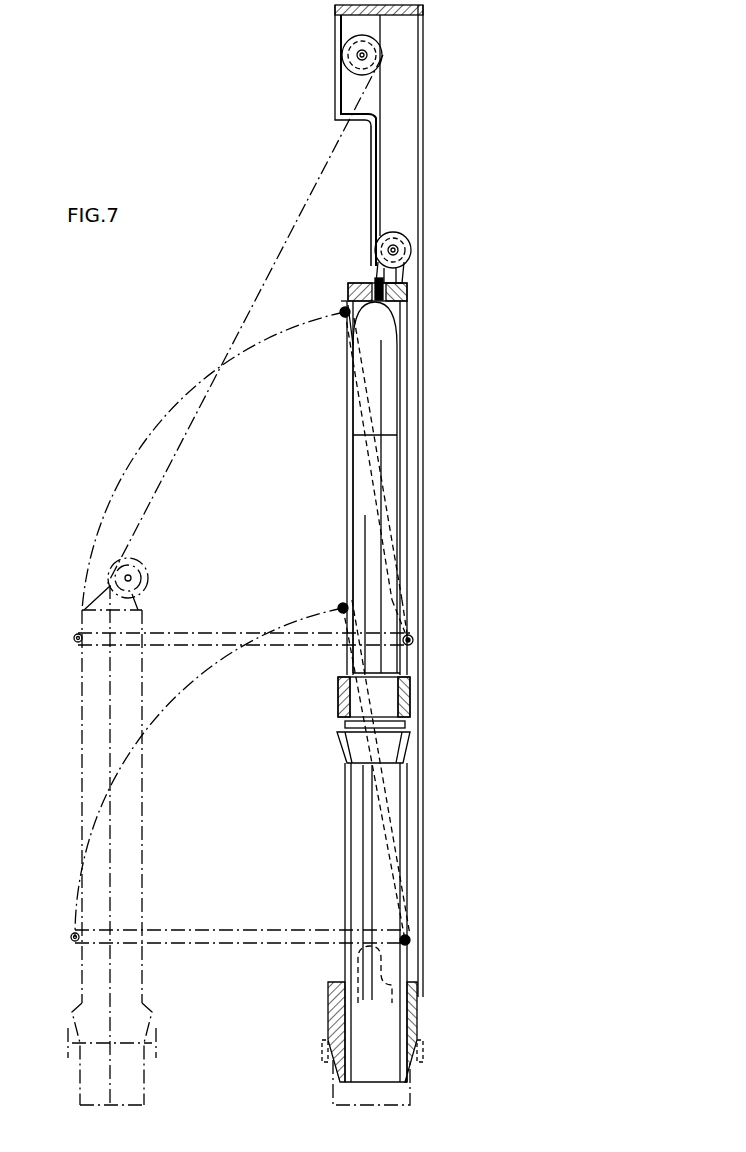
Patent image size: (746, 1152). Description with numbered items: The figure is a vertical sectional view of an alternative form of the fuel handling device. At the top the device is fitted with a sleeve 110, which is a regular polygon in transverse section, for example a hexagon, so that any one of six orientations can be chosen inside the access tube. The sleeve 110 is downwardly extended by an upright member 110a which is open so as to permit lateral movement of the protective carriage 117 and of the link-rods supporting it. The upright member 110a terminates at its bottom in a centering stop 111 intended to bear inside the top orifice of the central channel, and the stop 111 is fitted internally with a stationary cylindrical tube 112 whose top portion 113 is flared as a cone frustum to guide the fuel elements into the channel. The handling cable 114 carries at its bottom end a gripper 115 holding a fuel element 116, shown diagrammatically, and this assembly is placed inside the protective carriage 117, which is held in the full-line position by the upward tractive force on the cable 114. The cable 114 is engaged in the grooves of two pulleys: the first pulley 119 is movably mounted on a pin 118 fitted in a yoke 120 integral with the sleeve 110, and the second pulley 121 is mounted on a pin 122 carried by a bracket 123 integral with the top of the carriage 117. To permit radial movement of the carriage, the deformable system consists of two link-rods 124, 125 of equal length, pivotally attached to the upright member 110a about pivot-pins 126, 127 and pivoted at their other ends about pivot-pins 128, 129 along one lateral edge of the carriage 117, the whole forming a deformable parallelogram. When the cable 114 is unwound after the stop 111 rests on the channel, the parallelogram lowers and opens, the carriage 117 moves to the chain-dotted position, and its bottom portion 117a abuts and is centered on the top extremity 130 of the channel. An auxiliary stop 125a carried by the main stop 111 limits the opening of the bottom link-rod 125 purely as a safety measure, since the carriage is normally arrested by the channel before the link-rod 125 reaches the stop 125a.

The sleeve 110 is at (423, 12).
The upright member 110a is at (421, 389).
The centering stop 111 is at (410, 1037).
The stationary cylindrical tube 112 is at (404, 797).
The top portion 113 is at (406, 752).
The handling cable 114 is at (381, 160).
The gripper 115 is at (380, 358).
The fuel element 116 is at (387, 665).
The protective carriage 117 is at (400, 292).
The bottom portion of the carriage 117a is at (404, 700).
The pin 118 is at (378, 70).
The first pulley 119 is at (366, 58).
The yoke 120 is at (383, 50).
The second pulley 121 is at (397, 232).
The pin 122 is at (398, 250).
The bracket 123 is at (404, 276).
The link-rod 124 is at (381, 485).
The link-rod 125 is at (388, 726).
The auxiliary stop 125a is at (370, 950).
The pivot-pin 126 is at (412, 641).
The pivot-pin 127 is at (409, 942).
The pivot-pin 128 is at (350, 316).
The pivot-pin 129 is at (349, 610).
The top extremity of the channel 130 is at (148, 1043).